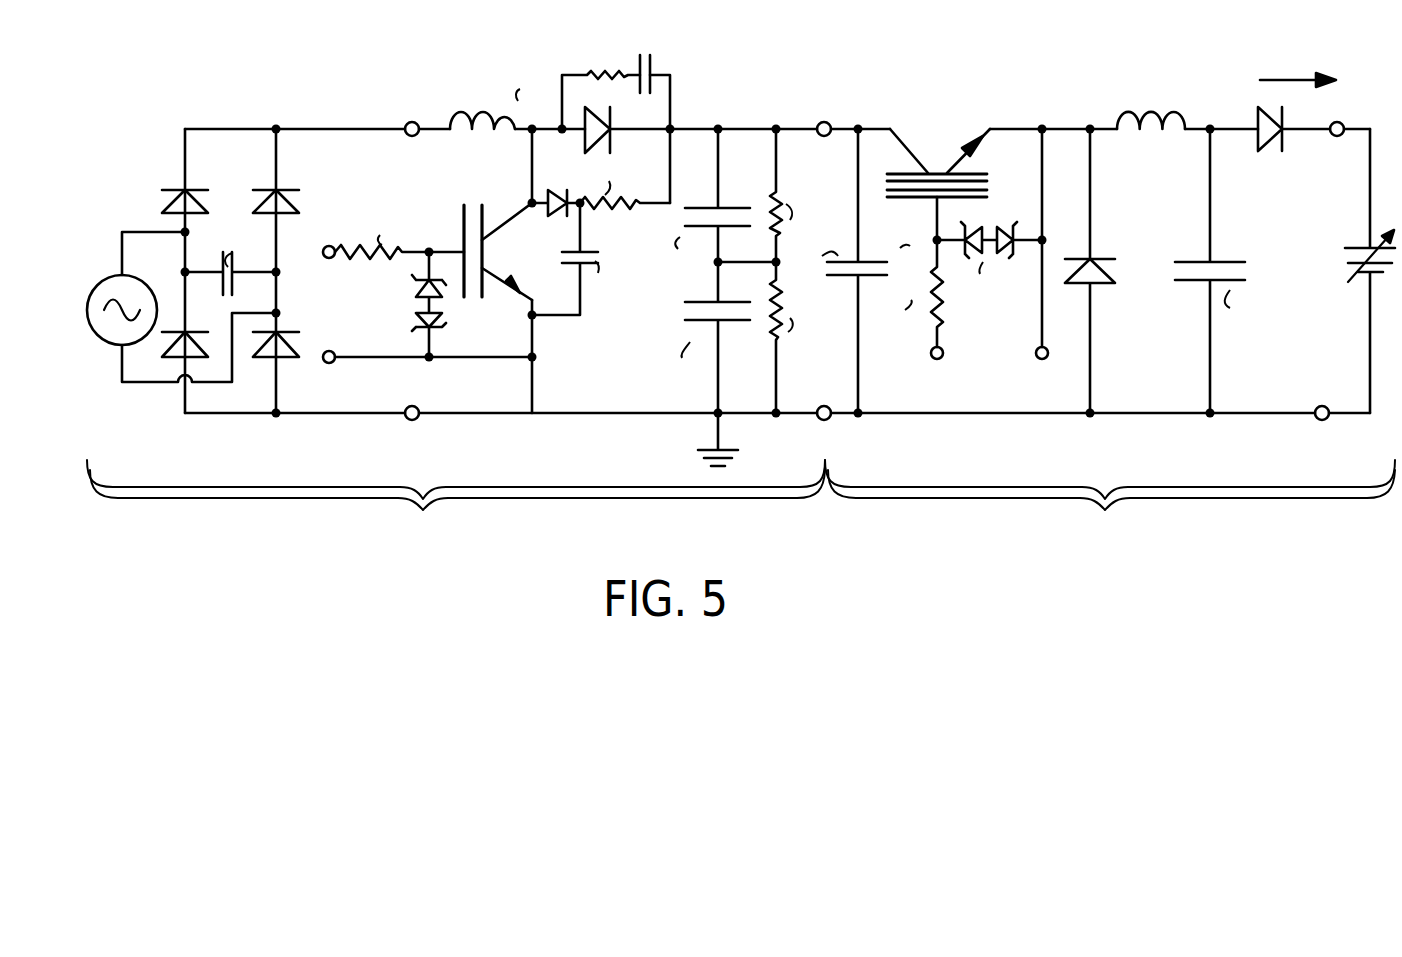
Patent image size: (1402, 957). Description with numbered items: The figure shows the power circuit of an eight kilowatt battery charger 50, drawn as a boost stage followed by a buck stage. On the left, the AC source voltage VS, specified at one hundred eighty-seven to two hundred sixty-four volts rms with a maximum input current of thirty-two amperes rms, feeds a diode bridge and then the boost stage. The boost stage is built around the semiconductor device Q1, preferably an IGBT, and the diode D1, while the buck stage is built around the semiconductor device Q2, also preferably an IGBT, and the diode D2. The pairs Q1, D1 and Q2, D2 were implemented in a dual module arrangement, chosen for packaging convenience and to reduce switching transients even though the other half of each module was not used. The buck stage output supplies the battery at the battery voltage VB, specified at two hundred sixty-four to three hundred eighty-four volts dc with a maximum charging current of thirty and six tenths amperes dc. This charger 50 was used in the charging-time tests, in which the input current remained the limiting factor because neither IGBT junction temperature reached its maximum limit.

The battery charger 50 is at (203, 98).
The semiconductor device Q1 is at (498, 251).
The semiconductor device Q2 is at (938, 172).
The diode D1 is at (658, 86).
The diode D2 is at (1097, 271).
The source voltage VS is at (106, 276).
The battery voltage VB is at (1306, 259).